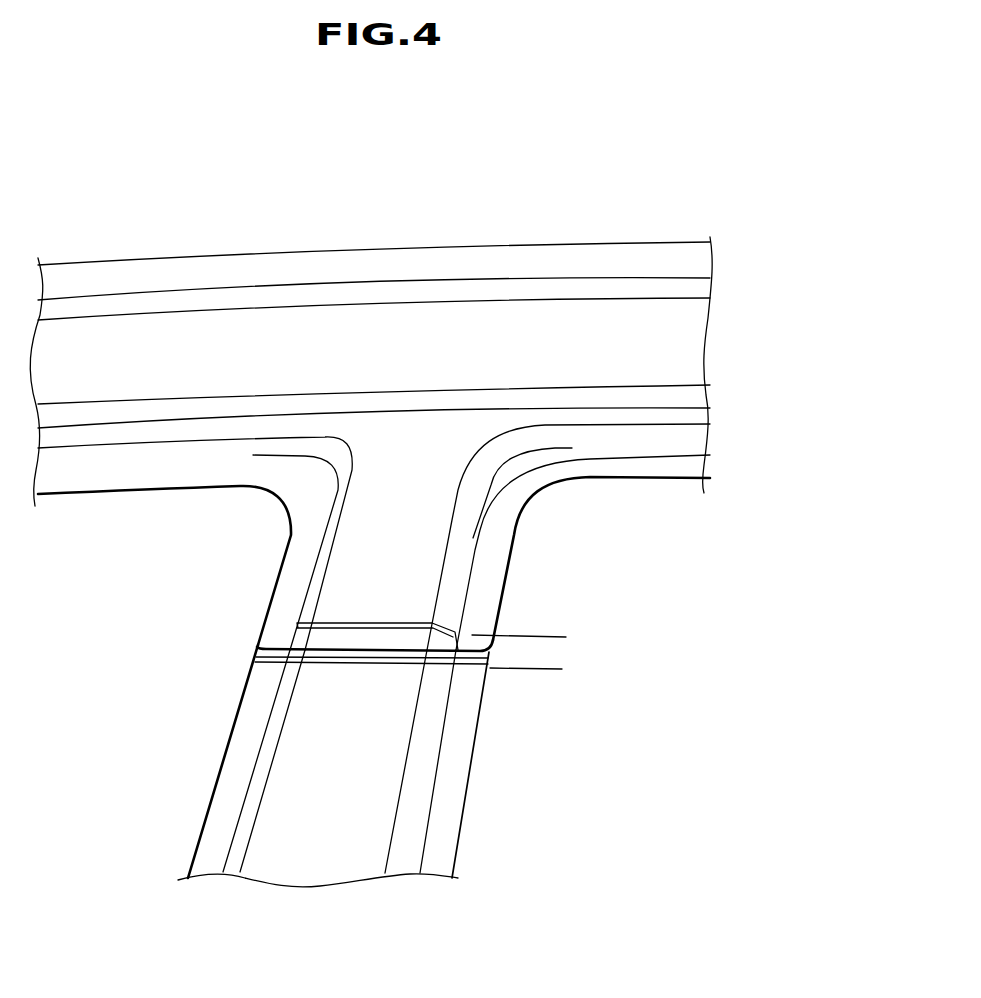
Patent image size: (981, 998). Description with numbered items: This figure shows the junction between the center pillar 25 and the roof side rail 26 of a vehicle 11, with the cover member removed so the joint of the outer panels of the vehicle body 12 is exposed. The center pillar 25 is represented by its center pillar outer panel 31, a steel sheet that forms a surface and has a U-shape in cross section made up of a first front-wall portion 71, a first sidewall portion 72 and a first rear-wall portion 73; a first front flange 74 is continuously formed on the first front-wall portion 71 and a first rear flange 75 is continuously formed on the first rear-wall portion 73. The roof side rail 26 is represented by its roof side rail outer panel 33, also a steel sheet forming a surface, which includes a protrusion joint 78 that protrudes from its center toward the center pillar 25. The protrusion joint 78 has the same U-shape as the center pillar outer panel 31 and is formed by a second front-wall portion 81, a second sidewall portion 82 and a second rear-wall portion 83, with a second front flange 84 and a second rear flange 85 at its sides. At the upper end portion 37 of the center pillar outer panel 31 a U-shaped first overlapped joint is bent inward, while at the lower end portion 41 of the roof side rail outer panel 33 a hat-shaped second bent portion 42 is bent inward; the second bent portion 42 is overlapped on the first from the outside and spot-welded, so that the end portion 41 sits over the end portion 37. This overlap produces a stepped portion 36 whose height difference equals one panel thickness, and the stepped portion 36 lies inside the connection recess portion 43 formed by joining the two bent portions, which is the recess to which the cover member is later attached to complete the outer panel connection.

The vehicle 11 is at (171, 108).
The vehicle body 12 is at (244, 234).
The center pillar 25 is at (208, 803).
The roof side rail 26 is at (604, 296).
The center pillar outer panel 31 is at (313, 887).
The roof side rail outer panel 33 is at (656, 333).
The stepped portion 36 is at (378, 643).
The end portion of the center pillar outer panel 37 is at (340, 667).
The end portion of the roof side rail outer panel 41 is at (340, 612).
The second bent portion 42 is at (360, 612).
The connection recess portion 43 is at (562, 607).
The first front-wall portion 71 is at (270, 745).
The first sidewall portion 72 is at (277, 838).
The first rear-wall portion 73 is at (423, 763).
The first front flange 74 is at (238, 773).
The first rear flange 75 is at (447, 810).
The protrusion joint 78 is at (268, 502).
The second front-wall portion 81 is at (310, 599).
The second sidewall portion 82 is at (393, 583).
The second rear-wall portion 83 is at (462, 562).
The second front flange 84 is at (295, 569).
The second rear flange 85 is at (485, 607).